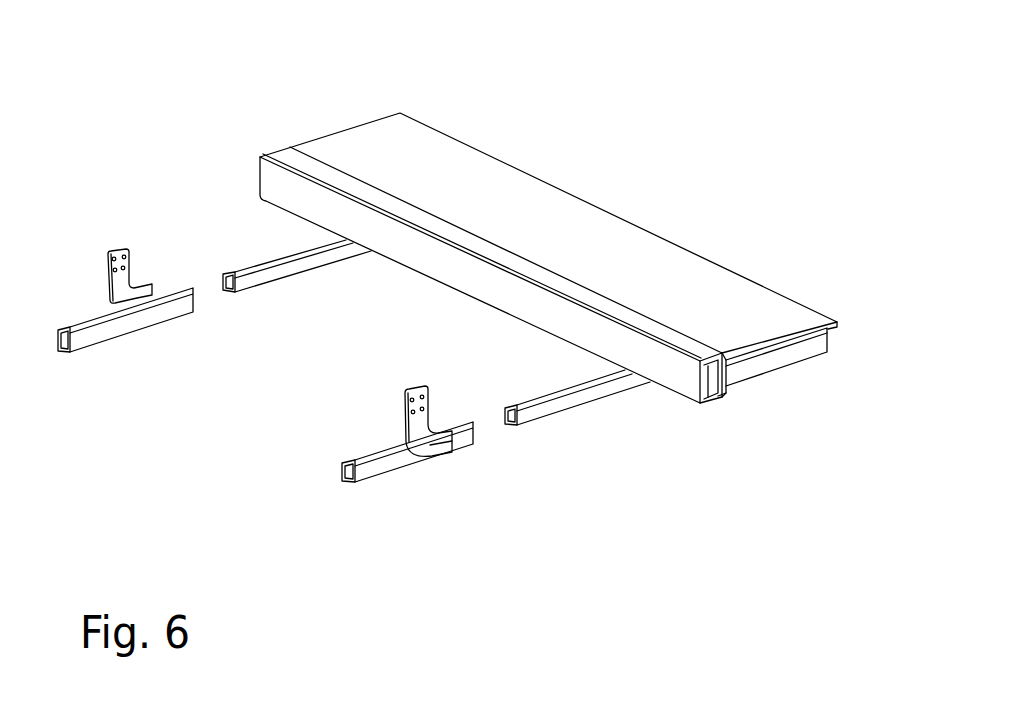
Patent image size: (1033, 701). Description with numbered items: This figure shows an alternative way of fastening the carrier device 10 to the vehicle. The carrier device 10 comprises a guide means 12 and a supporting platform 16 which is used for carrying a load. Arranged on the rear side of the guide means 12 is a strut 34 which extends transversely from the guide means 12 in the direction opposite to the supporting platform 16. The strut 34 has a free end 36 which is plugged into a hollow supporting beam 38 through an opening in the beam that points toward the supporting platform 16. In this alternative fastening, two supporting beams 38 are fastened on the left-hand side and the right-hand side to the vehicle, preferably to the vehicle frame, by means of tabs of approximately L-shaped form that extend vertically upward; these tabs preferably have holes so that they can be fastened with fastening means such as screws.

The carrier device 10 is at (656, 121).
The guide means 12 is at (290, 157).
The supporting platform 16 is at (733, 288).
The strut 34 is at (593, 393).
The free end 36 is at (507, 428).
The supporting beam 38 is at (193, 292).